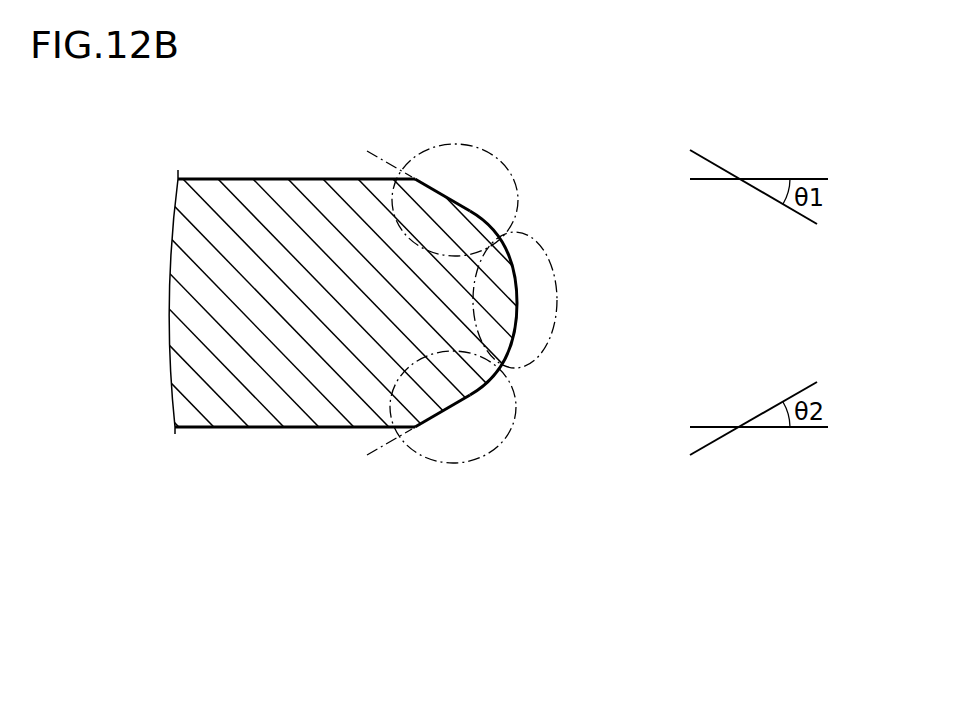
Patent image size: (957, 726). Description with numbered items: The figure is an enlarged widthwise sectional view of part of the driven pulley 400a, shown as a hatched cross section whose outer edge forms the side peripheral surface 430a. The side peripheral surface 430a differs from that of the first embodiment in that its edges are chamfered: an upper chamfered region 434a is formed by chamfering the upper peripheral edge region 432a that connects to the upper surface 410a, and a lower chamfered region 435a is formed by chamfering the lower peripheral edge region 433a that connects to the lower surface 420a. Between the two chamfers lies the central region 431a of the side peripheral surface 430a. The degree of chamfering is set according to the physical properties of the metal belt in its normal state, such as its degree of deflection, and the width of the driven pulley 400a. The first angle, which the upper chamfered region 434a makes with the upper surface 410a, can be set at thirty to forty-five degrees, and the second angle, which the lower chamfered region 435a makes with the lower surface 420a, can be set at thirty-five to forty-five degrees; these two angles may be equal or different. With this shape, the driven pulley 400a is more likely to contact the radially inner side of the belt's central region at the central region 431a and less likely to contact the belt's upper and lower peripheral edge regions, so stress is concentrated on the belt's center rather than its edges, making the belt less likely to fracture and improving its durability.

The driven pulley 400a is at (370, 315).
The upper surface 410a is at (240, 178).
The lower surface 420a is at (242, 428).
The side peripheral surface 430a is at (530, 305).
The central region 431a is at (547, 265).
The upper peripheral edge region 432a is at (478, 171).
The lower peripheral edge region 433a is at (497, 417).
The upper chamfered region 434a is at (437, 180).
The lower chamfered region 435a is at (437, 428).